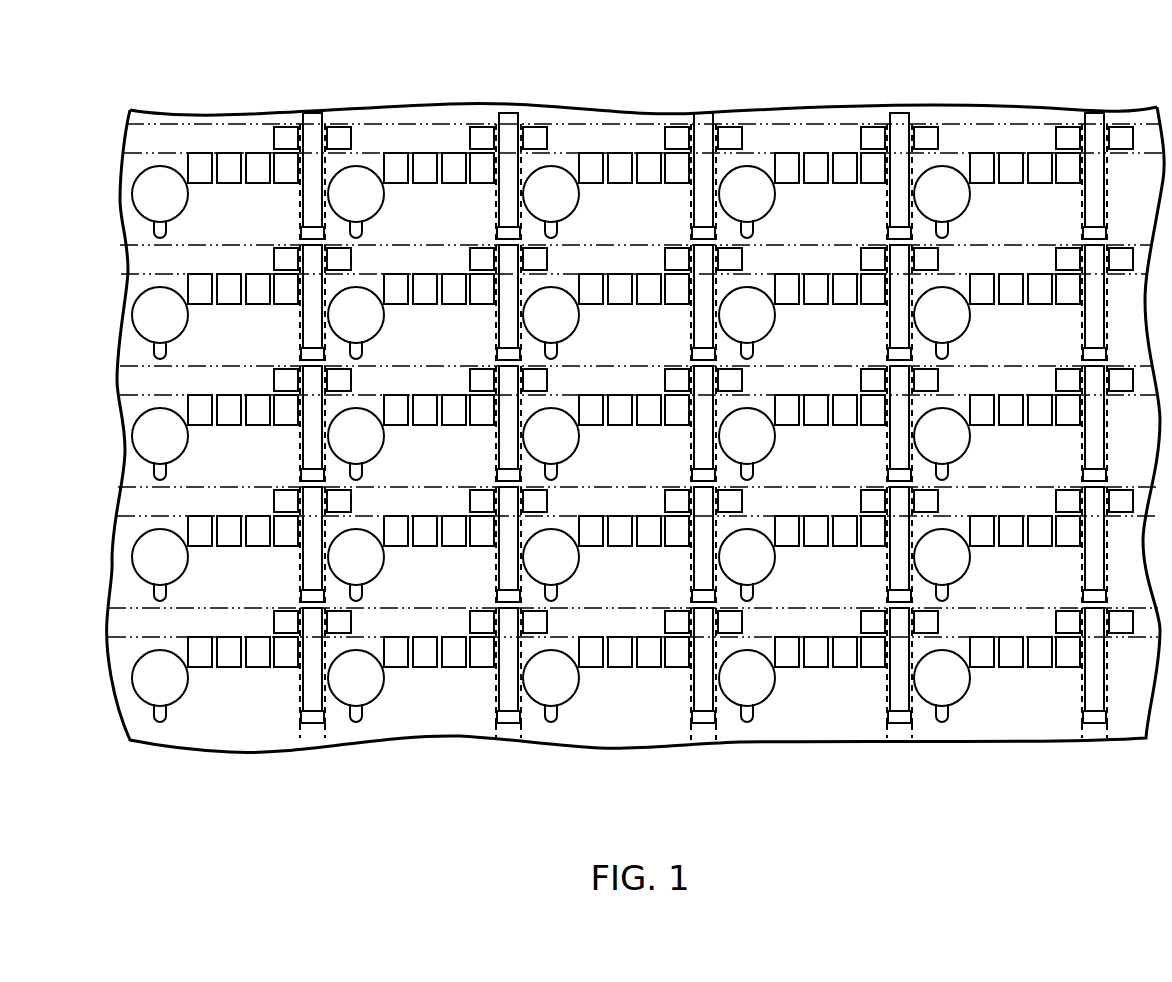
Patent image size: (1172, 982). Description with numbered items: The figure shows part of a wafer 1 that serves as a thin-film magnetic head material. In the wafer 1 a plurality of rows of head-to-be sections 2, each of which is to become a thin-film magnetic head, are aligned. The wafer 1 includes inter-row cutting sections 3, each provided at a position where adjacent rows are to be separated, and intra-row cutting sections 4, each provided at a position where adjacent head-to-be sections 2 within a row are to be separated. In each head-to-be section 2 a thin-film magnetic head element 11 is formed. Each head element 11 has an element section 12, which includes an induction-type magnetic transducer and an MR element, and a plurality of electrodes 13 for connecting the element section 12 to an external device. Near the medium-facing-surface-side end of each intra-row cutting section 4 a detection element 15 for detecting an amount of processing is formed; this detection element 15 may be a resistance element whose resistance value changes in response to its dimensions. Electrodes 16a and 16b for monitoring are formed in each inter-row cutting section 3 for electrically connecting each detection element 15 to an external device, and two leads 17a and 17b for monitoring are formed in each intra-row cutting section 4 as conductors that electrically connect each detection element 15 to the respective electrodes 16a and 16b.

The wafer 1 is at (611, 759).
The head-to-be section 2 is at (572, 119).
The inter-row cutting section 3 is at (124, 140).
The intra-row cutting section 4 is at (311, 740).
The thin-film magnetic head element 11 is at (438, 53).
The element section 12 is at (358, 166).
The electrodes 13 is at (478, 150).
The detection element 15 is at (498, 233).
The electrode for monitoring 16a is at (485, 127).
The electrode for monitoring 16b is at (527, 127).
The lead for monitoring 17a is at (496, 205).
The lead for monitoring 17b is at (524, 152).